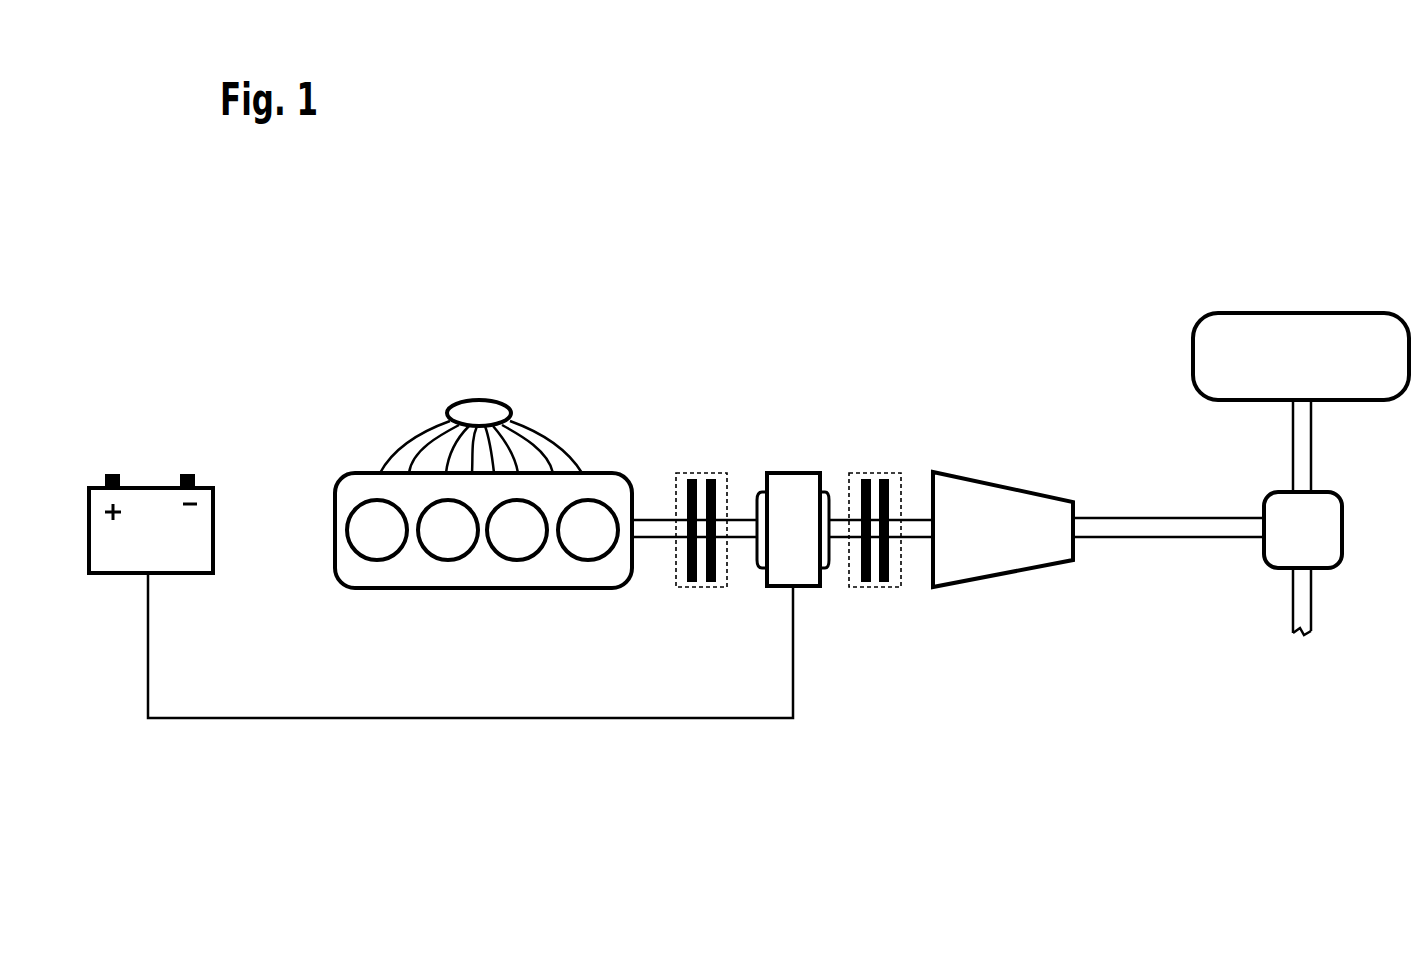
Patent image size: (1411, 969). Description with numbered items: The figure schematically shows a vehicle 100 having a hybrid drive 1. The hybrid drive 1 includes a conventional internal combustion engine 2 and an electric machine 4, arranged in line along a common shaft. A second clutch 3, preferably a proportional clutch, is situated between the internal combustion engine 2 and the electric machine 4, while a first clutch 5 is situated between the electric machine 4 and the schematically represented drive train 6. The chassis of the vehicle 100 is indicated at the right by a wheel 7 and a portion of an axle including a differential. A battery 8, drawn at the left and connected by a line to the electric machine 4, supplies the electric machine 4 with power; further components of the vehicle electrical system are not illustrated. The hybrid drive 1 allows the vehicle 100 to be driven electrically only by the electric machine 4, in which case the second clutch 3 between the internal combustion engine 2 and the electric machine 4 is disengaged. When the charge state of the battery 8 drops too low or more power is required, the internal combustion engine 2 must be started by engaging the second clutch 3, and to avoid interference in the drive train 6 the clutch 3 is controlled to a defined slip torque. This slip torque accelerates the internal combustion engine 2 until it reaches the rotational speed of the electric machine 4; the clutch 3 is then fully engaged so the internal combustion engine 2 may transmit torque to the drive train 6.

The vehicle 100 is at (1212, 224).
The hybrid drive 1 is at (1130, 637).
The internal combustion engine 2 is at (479, 397).
The second clutch 3 is at (695, 477).
The electric machine 4 is at (793, 490).
The first clutch 5 is at (868, 480).
The drive train 6 is at (998, 480).
The wheel 7 is at (1193, 350).
The battery 8 is at (150, 503).